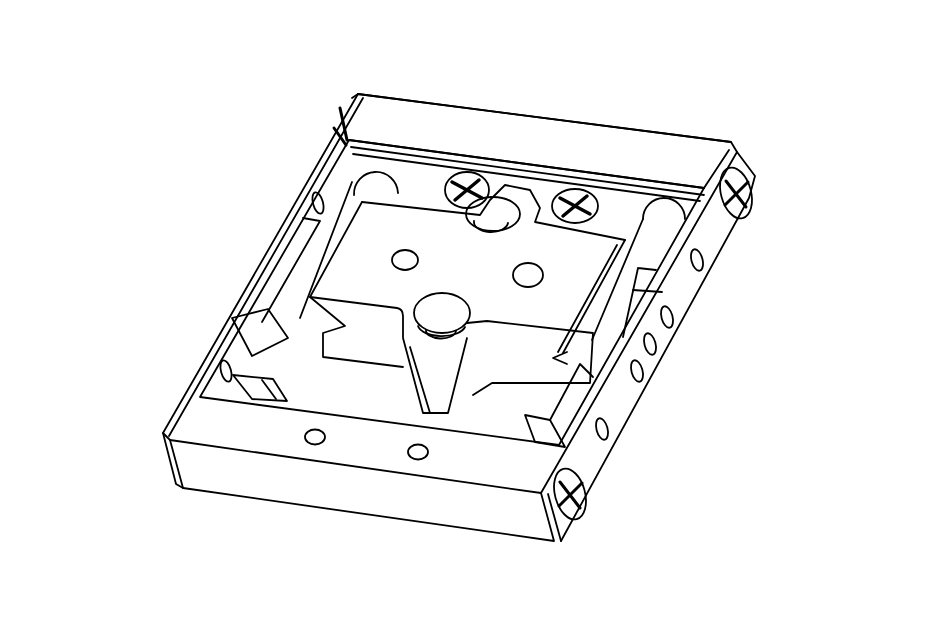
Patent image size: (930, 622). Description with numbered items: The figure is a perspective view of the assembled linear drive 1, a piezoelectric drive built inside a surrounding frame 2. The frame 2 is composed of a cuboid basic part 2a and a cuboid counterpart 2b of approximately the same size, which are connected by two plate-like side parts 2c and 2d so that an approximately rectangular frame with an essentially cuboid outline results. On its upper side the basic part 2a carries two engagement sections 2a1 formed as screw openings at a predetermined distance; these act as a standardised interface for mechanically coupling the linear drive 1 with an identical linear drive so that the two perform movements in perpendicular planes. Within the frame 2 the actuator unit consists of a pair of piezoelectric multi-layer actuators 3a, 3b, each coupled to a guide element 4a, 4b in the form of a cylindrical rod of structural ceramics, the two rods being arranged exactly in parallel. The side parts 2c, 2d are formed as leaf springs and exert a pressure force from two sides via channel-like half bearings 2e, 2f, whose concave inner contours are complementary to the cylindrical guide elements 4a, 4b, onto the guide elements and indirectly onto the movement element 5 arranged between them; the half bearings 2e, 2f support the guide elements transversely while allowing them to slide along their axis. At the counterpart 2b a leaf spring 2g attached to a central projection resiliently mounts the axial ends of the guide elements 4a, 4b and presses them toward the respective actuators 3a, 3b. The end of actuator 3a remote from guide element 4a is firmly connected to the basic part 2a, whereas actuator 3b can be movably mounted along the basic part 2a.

The linear drive 1 is at (240, 201).
The frame 2 is at (184, 514).
The basic part 2a is at (220, 470).
The engagement sections 2a1 is at (315, 446).
The counterpart 2b is at (397, 127).
The side part 2c is at (232, 355).
The side part 2d is at (618, 405).
The half bearing 2e is at (280, 258).
The half bearing 2f is at (690, 322).
The leaf spring 2g is at (425, 180).
The piezoelectric multi-layer actuator 3a is at (216, 372).
The piezoelectric multi-layer actuator 3b is at (607, 463).
The guide element 4a is at (362, 185).
The guide element 4b is at (663, 222).
The movement element 5 is at (552, 258).